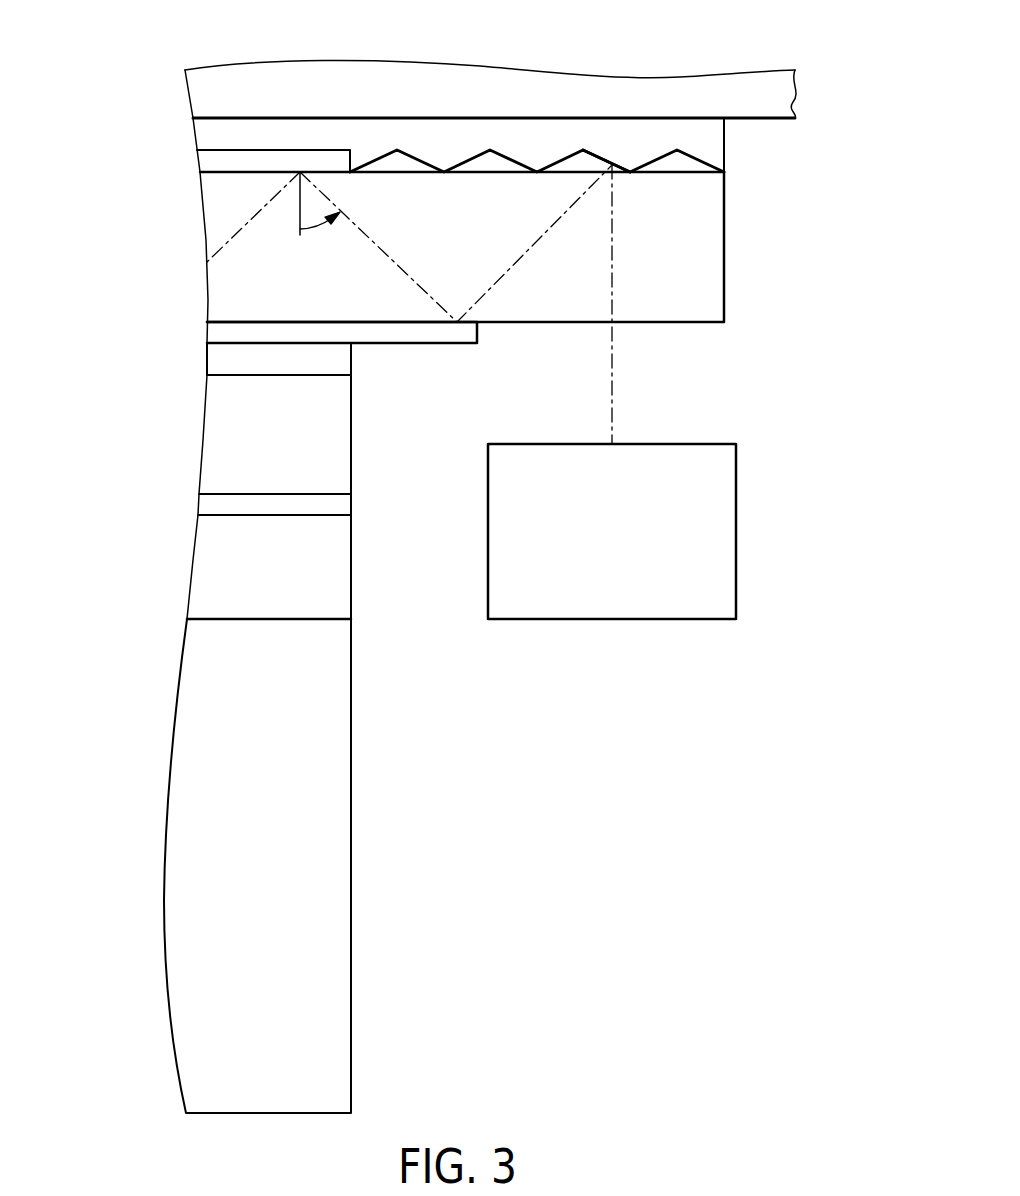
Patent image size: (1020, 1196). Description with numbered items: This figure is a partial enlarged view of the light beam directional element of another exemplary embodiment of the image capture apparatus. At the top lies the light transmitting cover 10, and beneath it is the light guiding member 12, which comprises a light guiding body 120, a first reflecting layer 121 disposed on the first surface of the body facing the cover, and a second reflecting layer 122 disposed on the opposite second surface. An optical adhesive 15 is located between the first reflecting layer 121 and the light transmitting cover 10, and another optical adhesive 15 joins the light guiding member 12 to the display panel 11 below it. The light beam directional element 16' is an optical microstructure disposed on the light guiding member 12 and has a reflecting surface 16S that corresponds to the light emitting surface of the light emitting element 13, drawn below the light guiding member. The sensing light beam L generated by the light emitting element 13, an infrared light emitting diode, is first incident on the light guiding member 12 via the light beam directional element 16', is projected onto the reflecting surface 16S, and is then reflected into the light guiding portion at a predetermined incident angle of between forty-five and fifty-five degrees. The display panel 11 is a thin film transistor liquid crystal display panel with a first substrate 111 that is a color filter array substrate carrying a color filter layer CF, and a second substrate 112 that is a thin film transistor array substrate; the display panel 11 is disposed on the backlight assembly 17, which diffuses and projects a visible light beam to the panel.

The light transmitting cover 10 is at (455, 90).
The optical adhesive 15 is at (553, 140).
The light guiding member 12 is at (462, 175).
The light guiding body 120 is at (703, 245).
The first reflecting layer 121 is at (266, 165).
The second reflecting layer 122 is at (232, 332).
The light beam directional element 16' is at (570, 150).
The reflecting surface 16S is at (653, 157).
The sensing light beam L is at (613, 366).
The light emitting element 13 is at (703, 533).
The display panel 11 is at (185, 481).
The first substrate 111 is at (225, 428).
The color filter layer CF is at (230, 506).
The second substrate 112 is at (214, 592).
The backlight assembly 17 is at (200, 837).